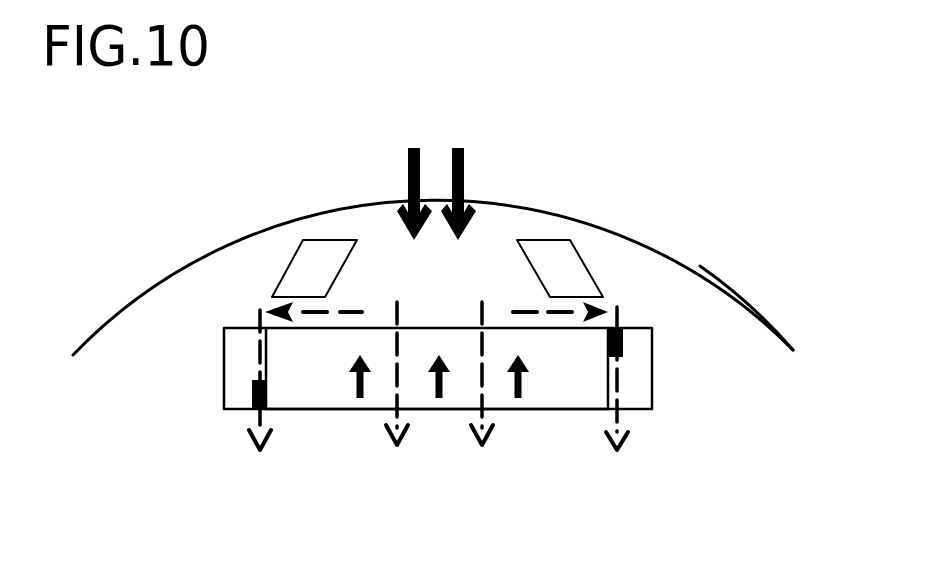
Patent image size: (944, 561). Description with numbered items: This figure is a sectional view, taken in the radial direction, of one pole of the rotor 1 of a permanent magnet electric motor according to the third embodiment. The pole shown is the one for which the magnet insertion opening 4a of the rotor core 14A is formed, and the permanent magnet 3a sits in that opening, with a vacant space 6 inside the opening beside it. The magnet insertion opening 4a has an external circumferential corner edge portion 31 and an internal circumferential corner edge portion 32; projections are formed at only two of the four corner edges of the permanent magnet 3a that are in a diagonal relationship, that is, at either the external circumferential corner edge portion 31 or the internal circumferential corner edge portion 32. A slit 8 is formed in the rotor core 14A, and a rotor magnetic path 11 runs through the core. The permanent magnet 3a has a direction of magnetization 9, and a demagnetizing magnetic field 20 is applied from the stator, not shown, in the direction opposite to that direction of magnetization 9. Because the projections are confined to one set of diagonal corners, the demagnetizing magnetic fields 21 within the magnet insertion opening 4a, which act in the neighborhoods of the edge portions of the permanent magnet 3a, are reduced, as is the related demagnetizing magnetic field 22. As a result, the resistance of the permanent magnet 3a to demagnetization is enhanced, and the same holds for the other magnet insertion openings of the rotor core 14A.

The rotor 1 is at (682, 258).
The rotor core 14A is at (738, 333).
The demagnetizing magnetic field 20 is at (463, 160).
The slit 8 is at (552, 295).
The rotor magnetic path 11 is at (572, 304).
The permanent magnet 3a is at (300, 382).
The external circumferential corner edge portion 31 is at (232, 343).
The internal circumferential corner edge portion 32 is at (229, 409).
The demagnetizing magnetic field 21 is at (258, 373).
The vacant space 6 is at (643, 387).
The demagnetizing magnetic field 22 is at (480, 382).
The direction of magnetization 9 is at (515, 385).
The magnet insertion opening 4a is at (542, 407).